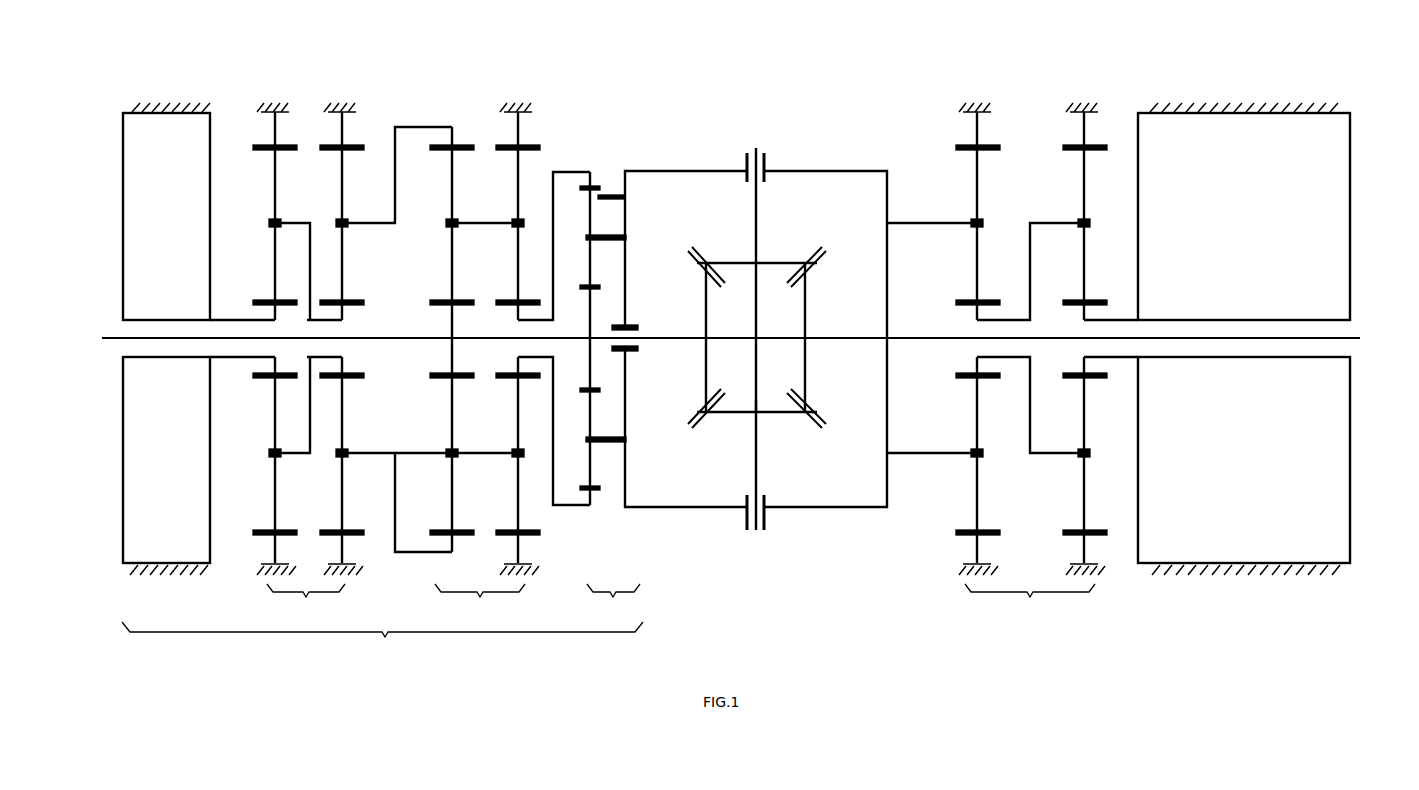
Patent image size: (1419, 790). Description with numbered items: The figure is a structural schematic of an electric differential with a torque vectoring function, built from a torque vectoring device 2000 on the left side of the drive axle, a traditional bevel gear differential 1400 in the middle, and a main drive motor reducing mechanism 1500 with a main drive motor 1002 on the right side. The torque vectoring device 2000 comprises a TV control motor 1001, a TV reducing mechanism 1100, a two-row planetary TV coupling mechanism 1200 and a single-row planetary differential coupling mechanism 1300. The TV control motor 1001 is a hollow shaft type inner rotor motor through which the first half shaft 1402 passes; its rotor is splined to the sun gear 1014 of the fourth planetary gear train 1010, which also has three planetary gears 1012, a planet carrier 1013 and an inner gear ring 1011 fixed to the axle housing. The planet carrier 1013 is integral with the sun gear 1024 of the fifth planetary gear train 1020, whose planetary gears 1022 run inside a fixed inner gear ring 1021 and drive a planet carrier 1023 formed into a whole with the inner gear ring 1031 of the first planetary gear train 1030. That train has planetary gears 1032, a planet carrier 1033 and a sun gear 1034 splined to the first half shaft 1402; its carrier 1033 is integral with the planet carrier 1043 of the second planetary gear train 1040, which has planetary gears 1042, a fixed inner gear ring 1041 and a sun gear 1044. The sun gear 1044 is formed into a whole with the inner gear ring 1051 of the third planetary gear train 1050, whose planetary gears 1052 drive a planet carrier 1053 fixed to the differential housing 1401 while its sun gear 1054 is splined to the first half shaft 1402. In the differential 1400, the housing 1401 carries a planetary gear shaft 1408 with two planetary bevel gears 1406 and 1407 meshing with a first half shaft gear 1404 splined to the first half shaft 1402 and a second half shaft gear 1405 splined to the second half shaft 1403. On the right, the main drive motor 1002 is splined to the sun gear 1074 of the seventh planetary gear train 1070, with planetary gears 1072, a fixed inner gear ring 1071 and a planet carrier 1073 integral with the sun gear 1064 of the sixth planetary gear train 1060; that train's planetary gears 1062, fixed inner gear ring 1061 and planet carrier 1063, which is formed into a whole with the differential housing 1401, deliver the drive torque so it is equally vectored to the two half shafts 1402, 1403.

The TV control motor 1001 is at (123, 530).
The main drive motor 1002 is at (1320, 545).
The fourth planetary gear train 1010 is at (273, 506).
The inner gear ring 1011 is at (275, 112).
The planetary gears 1012 is at (275, 150).
The planet carrier 1013 is at (275, 222).
The sun gear 1014 is at (262, 302).
The fifth planetary gear train 1020 is at (340, 506).
The inner gear ring 1021 is at (342, 112).
The planetary gears 1022 is at (342, 150).
The planet carrier 1023 is at (346, 225).
The sun gear 1024 is at (345, 302).
The first planetary gear train 1030 is at (450, 482).
The inner gear ring 1031 is at (452, 127).
The planetary gears 1032 is at (452, 150).
The planet carrier 1033 is at (452, 222).
The sun gear 1034 is at (446, 336).
The second planetary gear train 1040 is at (516, 482).
The inner gear ring 1041 is at (518, 112).
The planetary gears 1042 is at (518, 150).
The planet carrier 1043 is at (518, 226).
The sun gear 1044 is at (518, 302).
The third planetary gear train 1050 is at (590, 506).
The inner gear ring 1051 is at (590, 185).
The planetary gears 1052 is at (612, 196).
The planet carrier 1053 is at (625, 238).
The sun gear 1054 is at (612, 328).
The sixth planetary gear train 1060 is at (975, 490).
The inner gear ring 1061 is at (977, 112).
The planetary gears 1062 is at (977, 147).
The planet carrier 1063 is at (975, 223).
The sun gear 1064 is at (965, 302).
The seventh planetary gear train 1070 is at (1082, 506).
The inner gear ring 1071 is at (1084, 112).
The planetary gears 1072 is at (1084, 147).
The planet carrier 1073 is at (1084, 223).
The sun gear 1074 is at (1070, 302).
The TV reducing mechanism 1100 is at (306, 602).
The two-row planetary TV coupling mechanism 1200 is at (480, 602).
The single-row planetary differential coupling mechanism 1300 is at (613, 600).
The traditional bevel gear differential 1400 is at (828, 512).
The differential housing 1401 is at (692, 508).
The first half shaft 1402 is at (140, 337).
The second half shaft 1403 is at (1340, 337).
The first half shaft gear 1404 is at (705, 372).
The second half shaft gear 1405 is at (810, 378).
The planetary bevel gear 1406 is at (790, 262).
The planetary bevel gear 1407 is at (768, 413).
The planetary gear shaft 1408 is at (763, 153).
The main drive motor reducing mechanism 1500 is at (1030, 602).
The torque vectoring device 2000 is at (382, 644).